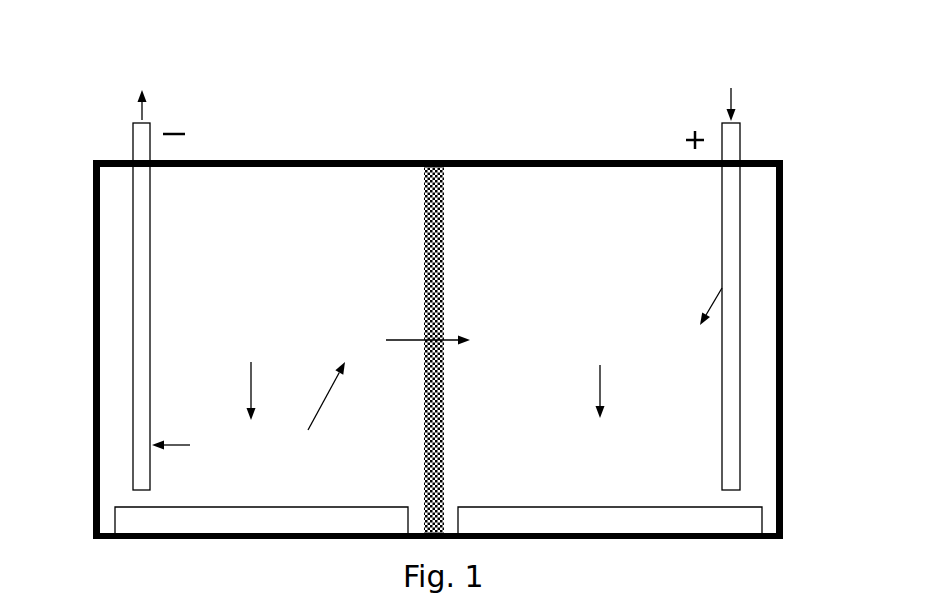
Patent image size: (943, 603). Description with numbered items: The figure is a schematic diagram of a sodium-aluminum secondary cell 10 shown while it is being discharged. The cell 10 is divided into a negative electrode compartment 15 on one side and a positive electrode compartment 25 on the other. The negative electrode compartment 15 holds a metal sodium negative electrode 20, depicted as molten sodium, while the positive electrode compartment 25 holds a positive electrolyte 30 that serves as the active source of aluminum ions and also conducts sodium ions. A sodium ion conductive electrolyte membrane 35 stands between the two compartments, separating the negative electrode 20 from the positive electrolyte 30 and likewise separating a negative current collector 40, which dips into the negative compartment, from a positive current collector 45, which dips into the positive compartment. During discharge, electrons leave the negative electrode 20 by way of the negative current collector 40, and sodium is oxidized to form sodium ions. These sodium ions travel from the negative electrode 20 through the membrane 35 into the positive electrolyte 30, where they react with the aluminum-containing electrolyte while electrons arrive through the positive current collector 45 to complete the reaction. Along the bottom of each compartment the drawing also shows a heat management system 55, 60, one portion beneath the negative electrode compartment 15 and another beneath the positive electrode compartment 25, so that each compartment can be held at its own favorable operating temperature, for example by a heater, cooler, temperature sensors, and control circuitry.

The sodium-aluminum secondary cell 10 is at (307, 105).
The negative electrode compartment 15 is at (255, 139).
The metal sodium negative electrode 20 is at (268, 258).
The positive electrode compartment 25 is at (593, 142).
The positive electrolyte 30 is at (626, 260).
The sodium ion conductive electrolyte membrane 35 is at (423, 205).
The negative current collector 40 is at (133, 299).
The positive current collector 45 is at (740, 252).
The heat management system 55 is at (178, 526).
The heat management system 60 is at (700, 525).